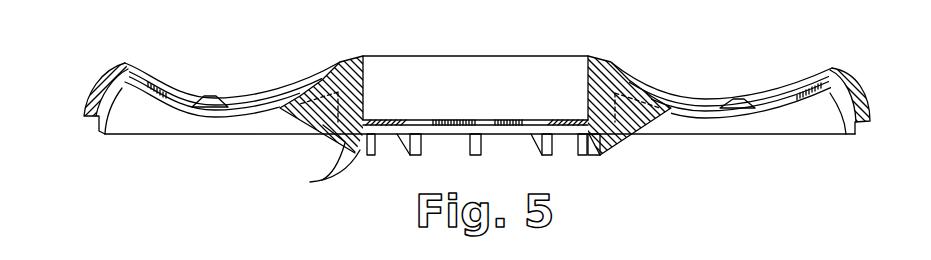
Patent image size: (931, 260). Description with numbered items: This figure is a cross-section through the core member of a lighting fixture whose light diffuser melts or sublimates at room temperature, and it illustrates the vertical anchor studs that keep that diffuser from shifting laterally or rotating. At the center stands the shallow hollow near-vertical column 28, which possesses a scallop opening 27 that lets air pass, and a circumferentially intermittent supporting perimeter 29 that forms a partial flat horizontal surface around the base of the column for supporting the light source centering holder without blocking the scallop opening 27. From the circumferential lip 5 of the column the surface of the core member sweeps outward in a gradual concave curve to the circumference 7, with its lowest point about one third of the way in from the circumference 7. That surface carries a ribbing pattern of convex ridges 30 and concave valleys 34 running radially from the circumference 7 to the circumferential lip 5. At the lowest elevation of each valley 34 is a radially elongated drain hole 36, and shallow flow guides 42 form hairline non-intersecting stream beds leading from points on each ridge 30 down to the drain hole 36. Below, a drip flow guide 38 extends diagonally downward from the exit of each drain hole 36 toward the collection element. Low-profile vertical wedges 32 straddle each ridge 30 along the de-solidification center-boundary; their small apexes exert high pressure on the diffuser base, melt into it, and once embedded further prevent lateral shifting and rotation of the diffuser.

The circumferential lip 5 is at (349, 58).
The circumference 7 is at (123, 62).
The scallop opening 27 is at (462, 125).
The shallow hollow near-vertical column 28 is at (458, 75).
The circumferentially intermittent supporting perimeter 29 is at (563, 120).
The ridges 30 is at (787, 97).
The low-profile vertical wedges 32 is at (738, 98).
The valleys 34 is at (647, 100).
The drain hole 36 is at (240, 110).
The drip flow guide 38 is at (310, 182).
The shallow flow guides 42 is at (174, 99).